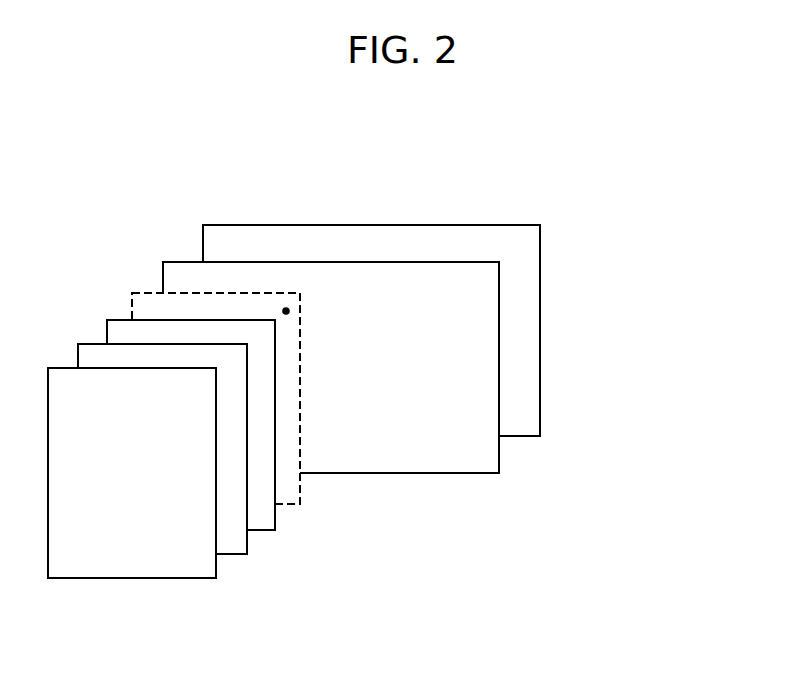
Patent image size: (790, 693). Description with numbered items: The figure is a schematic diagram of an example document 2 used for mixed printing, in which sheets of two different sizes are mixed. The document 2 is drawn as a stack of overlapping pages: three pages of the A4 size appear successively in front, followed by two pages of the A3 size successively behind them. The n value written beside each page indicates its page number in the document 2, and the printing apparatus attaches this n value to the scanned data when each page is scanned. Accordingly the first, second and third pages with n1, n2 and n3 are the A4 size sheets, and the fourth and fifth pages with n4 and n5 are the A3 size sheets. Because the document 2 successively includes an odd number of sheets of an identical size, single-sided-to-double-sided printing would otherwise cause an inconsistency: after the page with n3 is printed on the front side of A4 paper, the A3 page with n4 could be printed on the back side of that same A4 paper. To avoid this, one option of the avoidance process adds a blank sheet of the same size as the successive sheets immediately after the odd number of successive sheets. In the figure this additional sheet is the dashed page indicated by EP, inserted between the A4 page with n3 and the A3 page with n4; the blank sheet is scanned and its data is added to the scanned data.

The document 2 is at (374, 351).
The additional blank sheet EP is at (286, 306).
The A3 size page A3 is at (384, 362).
The A4 size page A4 is at (127, 468).
The page with n=1 n1 is at (204, 485).
The page with n=2 n2 is at (238, 548).
The page with n=3 n3 is at (265, 522).
The page with n=4 n4 is at (405, 373).
The page with n=5 n5 is at (535, 415).